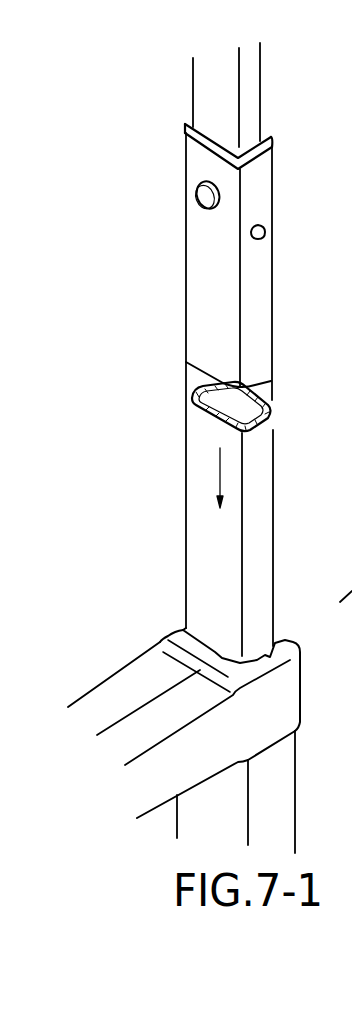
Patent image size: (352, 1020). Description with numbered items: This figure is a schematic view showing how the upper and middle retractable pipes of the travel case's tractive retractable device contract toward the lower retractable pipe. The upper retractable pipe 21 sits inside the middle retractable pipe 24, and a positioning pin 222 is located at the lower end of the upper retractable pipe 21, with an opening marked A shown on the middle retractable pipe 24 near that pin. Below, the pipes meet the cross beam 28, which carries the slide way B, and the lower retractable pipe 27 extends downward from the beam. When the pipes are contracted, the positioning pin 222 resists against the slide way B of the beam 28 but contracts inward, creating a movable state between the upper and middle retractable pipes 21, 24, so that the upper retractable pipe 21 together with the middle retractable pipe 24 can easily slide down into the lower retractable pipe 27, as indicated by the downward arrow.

The upper retractable pipe 21 is at (262, 108).
The middle retractable pipe 24 is at (270, 300).
The positioning pin 222 is at (266, 233).
The hole A is at (196, 204).
The slide way B is at (290, 662).
The cross beam 28 is at (140, 673).
The lower retractable pipe 27 is at (295, 808).